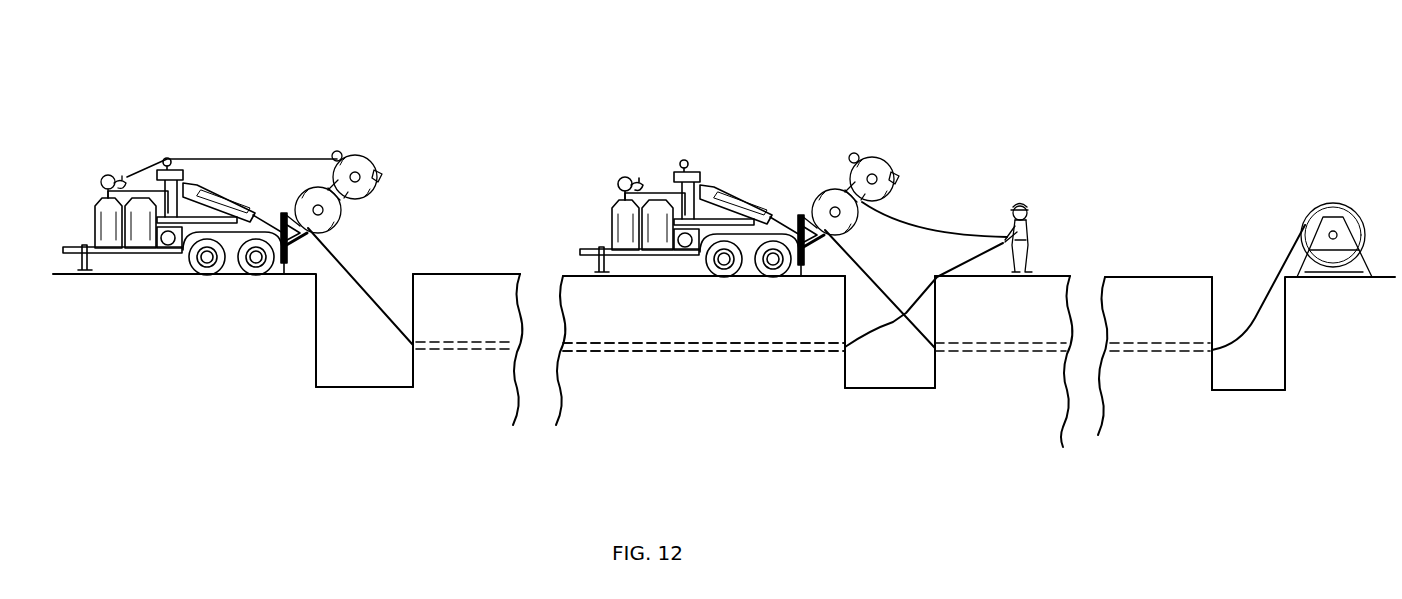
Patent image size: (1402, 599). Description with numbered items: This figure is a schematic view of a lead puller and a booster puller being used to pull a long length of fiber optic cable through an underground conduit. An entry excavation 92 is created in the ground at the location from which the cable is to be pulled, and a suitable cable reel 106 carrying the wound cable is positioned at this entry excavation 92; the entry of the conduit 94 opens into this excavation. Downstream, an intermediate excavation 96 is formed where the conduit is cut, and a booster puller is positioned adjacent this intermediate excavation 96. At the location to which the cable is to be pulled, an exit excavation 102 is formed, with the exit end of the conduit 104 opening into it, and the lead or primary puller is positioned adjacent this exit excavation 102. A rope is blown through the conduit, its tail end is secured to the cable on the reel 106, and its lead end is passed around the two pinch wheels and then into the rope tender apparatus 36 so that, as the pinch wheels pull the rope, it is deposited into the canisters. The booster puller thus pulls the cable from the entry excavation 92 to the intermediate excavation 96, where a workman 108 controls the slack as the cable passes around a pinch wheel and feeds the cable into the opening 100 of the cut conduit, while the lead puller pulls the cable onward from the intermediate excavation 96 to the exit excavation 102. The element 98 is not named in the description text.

The rope tender apparatus 36 is at (108, 172).
The excavation 92 is at (1245, 290).
The entry of the conduit 94 is at (1212, 352).
The intermediate excavation 96 is at (922, 318).
The trench right wall 98 is at (935, 352).
The opening 100 is at (845, 352).
The exit excavation 102 is at (390, 290).
The exit end of the conduit 104 is at (413, 352).
The cable reel 106 is at (1345, 204).
The worker 108 is at (1028, 247).